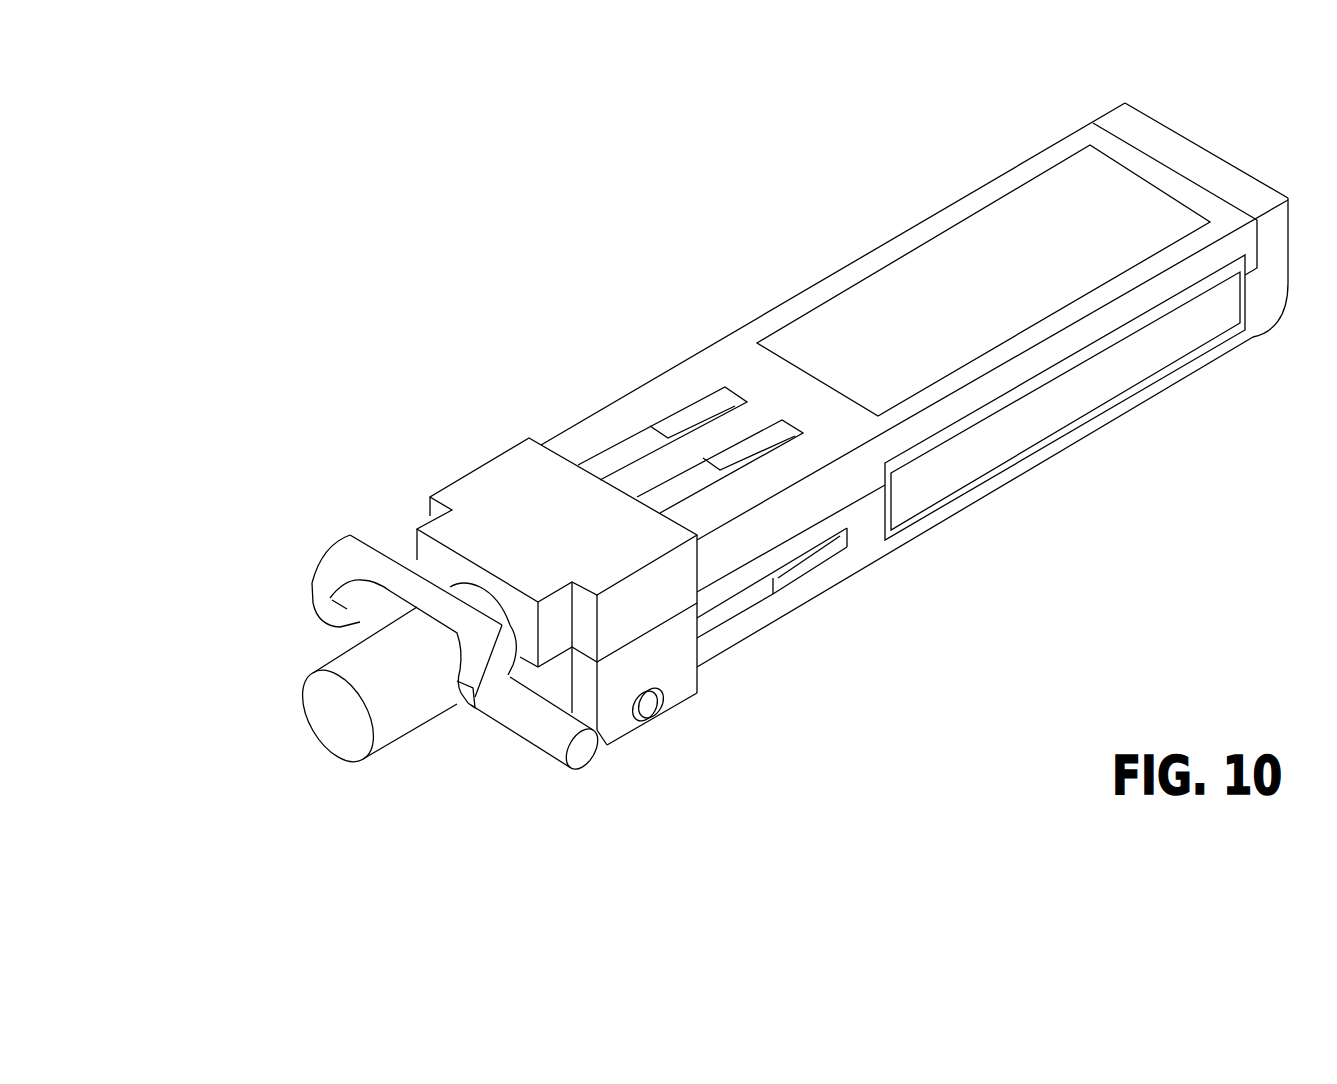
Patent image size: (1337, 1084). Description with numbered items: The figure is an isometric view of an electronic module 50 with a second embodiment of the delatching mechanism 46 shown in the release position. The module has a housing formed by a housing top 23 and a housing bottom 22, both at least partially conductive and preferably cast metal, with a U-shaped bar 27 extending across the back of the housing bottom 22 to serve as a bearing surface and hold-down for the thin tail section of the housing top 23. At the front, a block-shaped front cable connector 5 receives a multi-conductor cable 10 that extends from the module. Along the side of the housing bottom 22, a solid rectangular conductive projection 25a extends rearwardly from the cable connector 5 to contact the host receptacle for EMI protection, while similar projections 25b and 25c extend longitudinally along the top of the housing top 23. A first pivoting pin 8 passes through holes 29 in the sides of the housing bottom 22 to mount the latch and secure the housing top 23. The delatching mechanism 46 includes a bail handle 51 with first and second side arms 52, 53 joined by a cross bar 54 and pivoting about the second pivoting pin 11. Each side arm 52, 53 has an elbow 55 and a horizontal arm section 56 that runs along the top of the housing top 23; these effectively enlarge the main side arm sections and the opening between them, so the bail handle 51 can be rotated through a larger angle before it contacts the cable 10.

The electronic module 50 is at (545, 190).
The U-shaped bar 27 is at (1183, 153).
The housing top 23 is at (913, 287).
The housing bottom 22 is at (1143, 370).
The conductive projection 25a is at (797, 573).
The projection 25b is at (772, 438).
The projection 25c is at (618, 457).
The front cable connector 5 is at (478, 467).
The holes 29 is at (651, 684).
The cross bar 54 is at (383, 567).
The horizontal arm section 56 is at (348, 558).
The elbow 55 is at (313, 598).
The second side arm 53 is at (358, 620).
The multi-conductor cable 10 is at (338, 713).
The first side arm 52 is at (557, 742).
The second pivoting pin 11 is at (588, 748).
The first pivoting pin 8 is at (661, 712).
The delatching mechanism 46 is at (441, 773).
The bail handle 51 is at (480, 785).